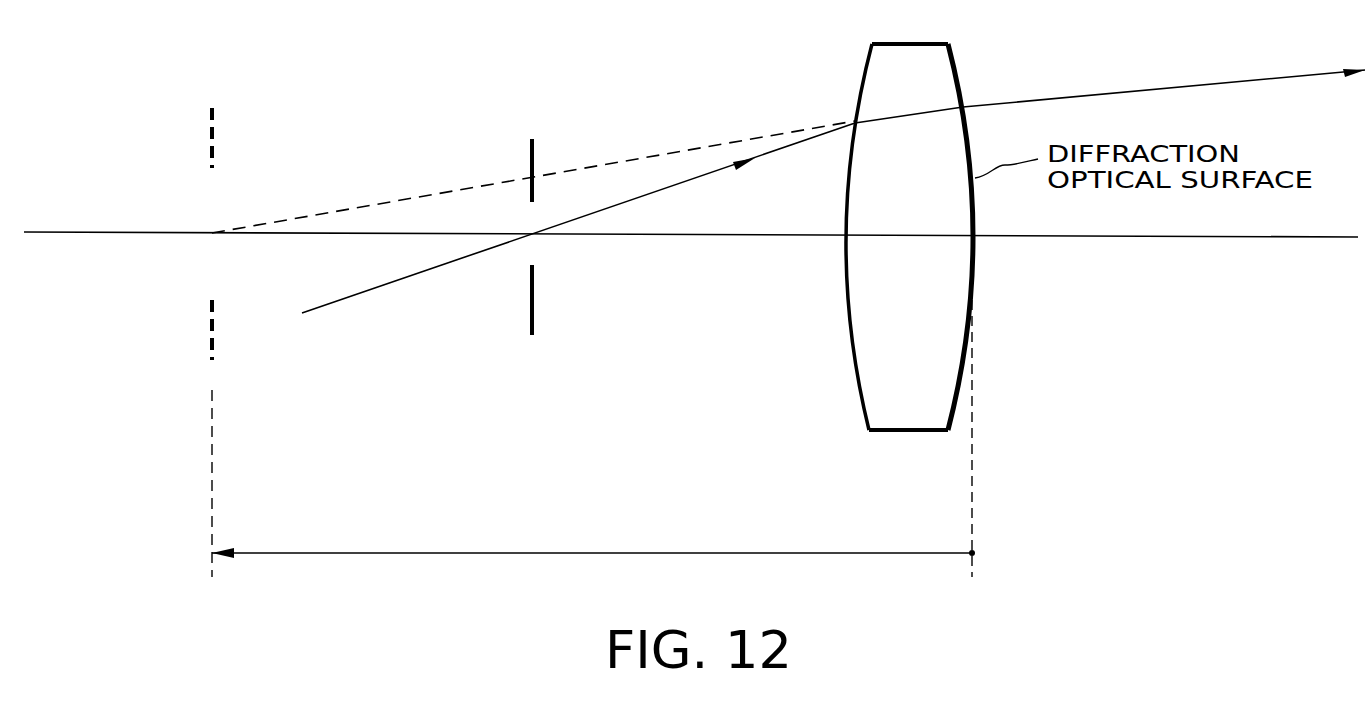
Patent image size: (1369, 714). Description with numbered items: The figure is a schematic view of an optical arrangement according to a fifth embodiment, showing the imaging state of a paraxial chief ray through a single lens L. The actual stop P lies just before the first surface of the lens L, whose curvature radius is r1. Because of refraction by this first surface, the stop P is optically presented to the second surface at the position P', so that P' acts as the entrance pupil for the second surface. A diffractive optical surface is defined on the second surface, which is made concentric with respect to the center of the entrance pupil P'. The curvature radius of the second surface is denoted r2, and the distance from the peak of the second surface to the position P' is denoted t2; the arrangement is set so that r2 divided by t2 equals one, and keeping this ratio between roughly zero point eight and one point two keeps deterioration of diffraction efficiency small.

The single lens L is at (912, 259).
The curvature radius of the first surface r1 is at (863, 67).
The curvature radius of the second surface r2 is at (957, 70).
The stop P is at (560, 205).
The entrance pupil position P' is at (248, 320).
The entrance pupil distance t2 is at (593, 438).